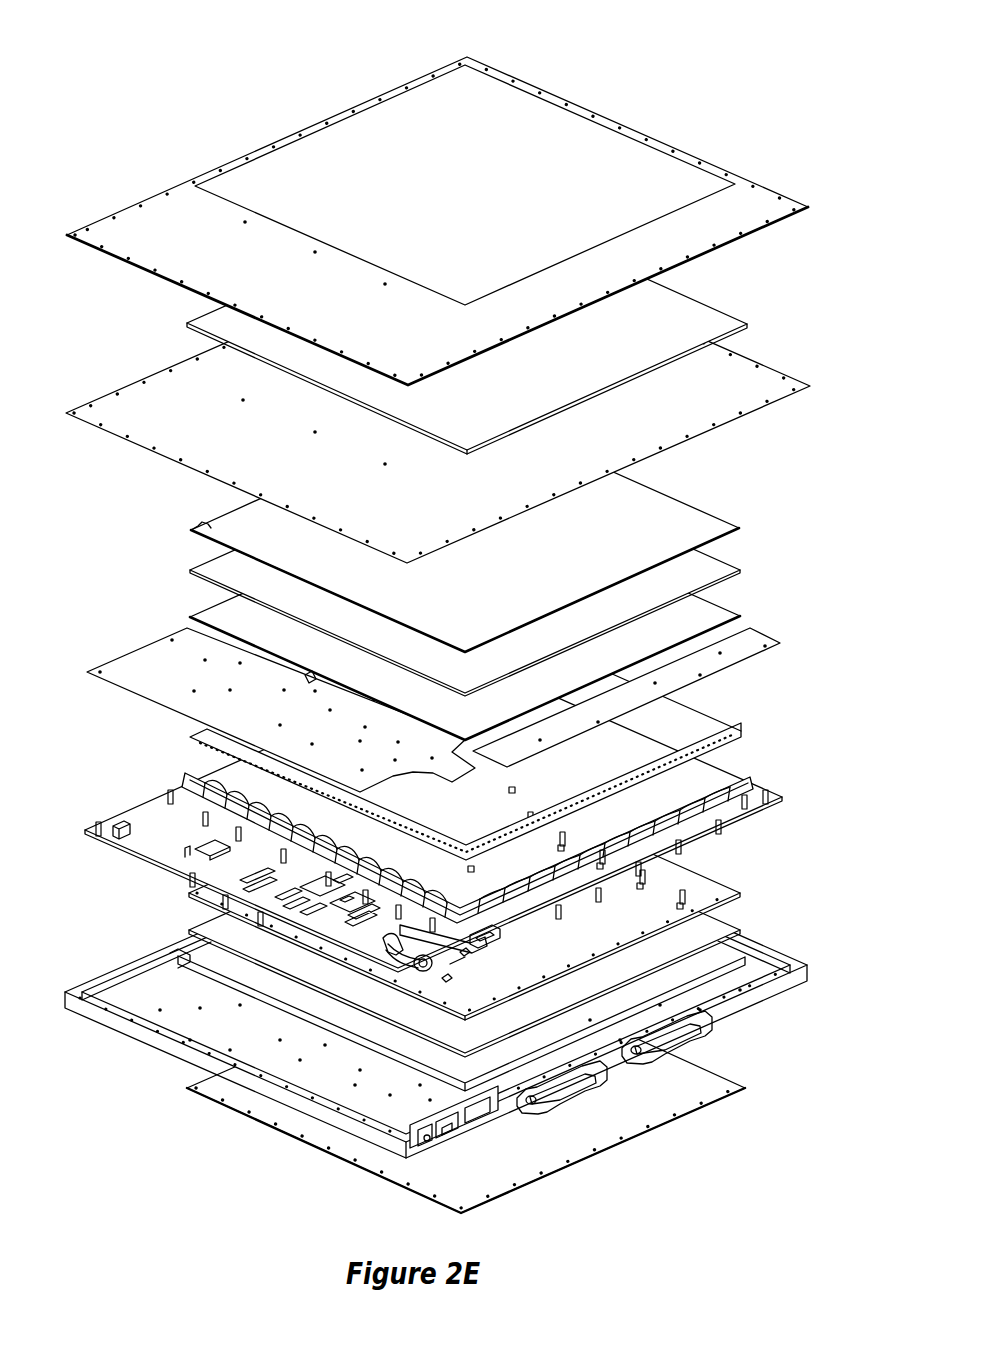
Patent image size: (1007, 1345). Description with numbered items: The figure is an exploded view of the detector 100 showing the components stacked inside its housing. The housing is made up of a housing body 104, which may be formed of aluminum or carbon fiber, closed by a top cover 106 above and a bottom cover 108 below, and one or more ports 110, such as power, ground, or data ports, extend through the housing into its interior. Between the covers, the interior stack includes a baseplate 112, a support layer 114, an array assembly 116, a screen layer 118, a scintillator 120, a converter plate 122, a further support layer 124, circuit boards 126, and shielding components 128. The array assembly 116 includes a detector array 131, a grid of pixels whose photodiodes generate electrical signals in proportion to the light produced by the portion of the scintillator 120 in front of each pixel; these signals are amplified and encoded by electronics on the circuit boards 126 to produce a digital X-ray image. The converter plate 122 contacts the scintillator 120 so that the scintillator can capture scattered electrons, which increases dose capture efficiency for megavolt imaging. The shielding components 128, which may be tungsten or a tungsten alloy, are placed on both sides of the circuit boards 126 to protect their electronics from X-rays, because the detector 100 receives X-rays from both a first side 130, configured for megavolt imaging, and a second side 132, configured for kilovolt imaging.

The detector 100 is at (86, 42).
The housing body 104 is at (108, 1022).
The top cover 106 is at (128, 222).
The bottom cover 108 is at (295, 1140).
The ports 110 is at (458, 970).
The baseplate 112 is at (680, 946).
The support layer 114 is at (723, 881).
The array assembly 116 is at (775, 776).
The screen layer 118 is at (715, 617).
The scintillator 120 is at (715, 572).
The converter plate 122 is at (715, 528).
The support layer 124 is at (715, 322).
The circuit boards 126 is at (140, 815).
The shielding components 128 is at (128, 668).
The first side 130 is at (649, 87).
The detector array 131 is at (200, 748).
The second side 132 is at (641, 1156).